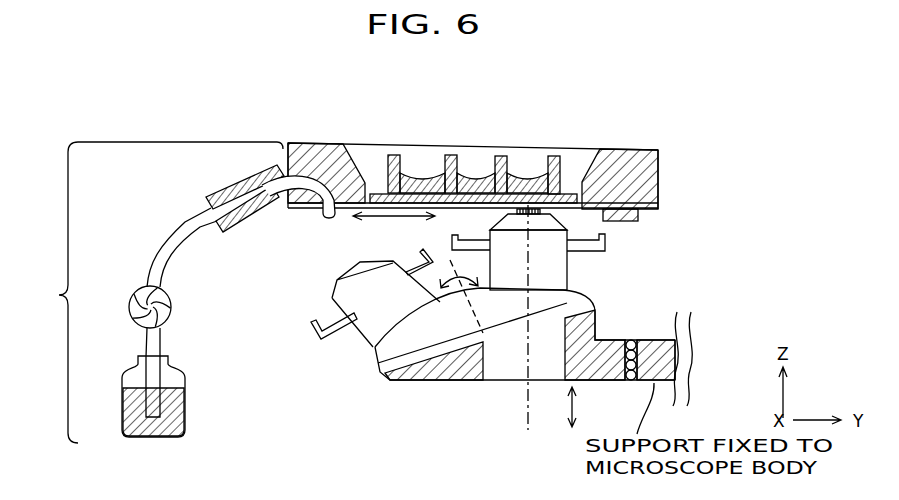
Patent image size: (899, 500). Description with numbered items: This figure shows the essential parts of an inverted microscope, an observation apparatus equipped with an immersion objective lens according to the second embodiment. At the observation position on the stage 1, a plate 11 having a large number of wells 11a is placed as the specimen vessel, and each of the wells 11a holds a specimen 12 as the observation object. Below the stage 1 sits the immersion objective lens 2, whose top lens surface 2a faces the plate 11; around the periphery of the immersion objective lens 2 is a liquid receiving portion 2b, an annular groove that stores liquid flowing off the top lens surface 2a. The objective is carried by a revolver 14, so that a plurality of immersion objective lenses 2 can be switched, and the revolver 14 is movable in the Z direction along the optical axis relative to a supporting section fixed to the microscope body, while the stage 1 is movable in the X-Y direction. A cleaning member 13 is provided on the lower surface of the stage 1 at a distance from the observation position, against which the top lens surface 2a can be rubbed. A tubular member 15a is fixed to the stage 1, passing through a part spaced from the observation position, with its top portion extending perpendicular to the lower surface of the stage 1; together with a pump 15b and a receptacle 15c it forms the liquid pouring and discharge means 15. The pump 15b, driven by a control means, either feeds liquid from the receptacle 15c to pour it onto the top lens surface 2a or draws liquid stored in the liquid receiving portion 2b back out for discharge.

The stage 1 is at (640, 149).
The plate 11 is at (385, 137).
The wells 11a is at (520, 167).
The specimen 12 is at (527, 196).
The cleaning member 13 is at (620, 221).
The revolver 14 is at (374, 366).
The liquid pouring and discharge means 15 is at (178, 292).
The tubular member 15a is at (238, 186).
The pump 15b is at (165, 325).
The receptacle 15c is at (177, 414).
The immersion objective lens 2 is at (362, 334).
The top lens surface 2a is at (342, 276).
The liquid receiving portion 2b is at (311, 324).